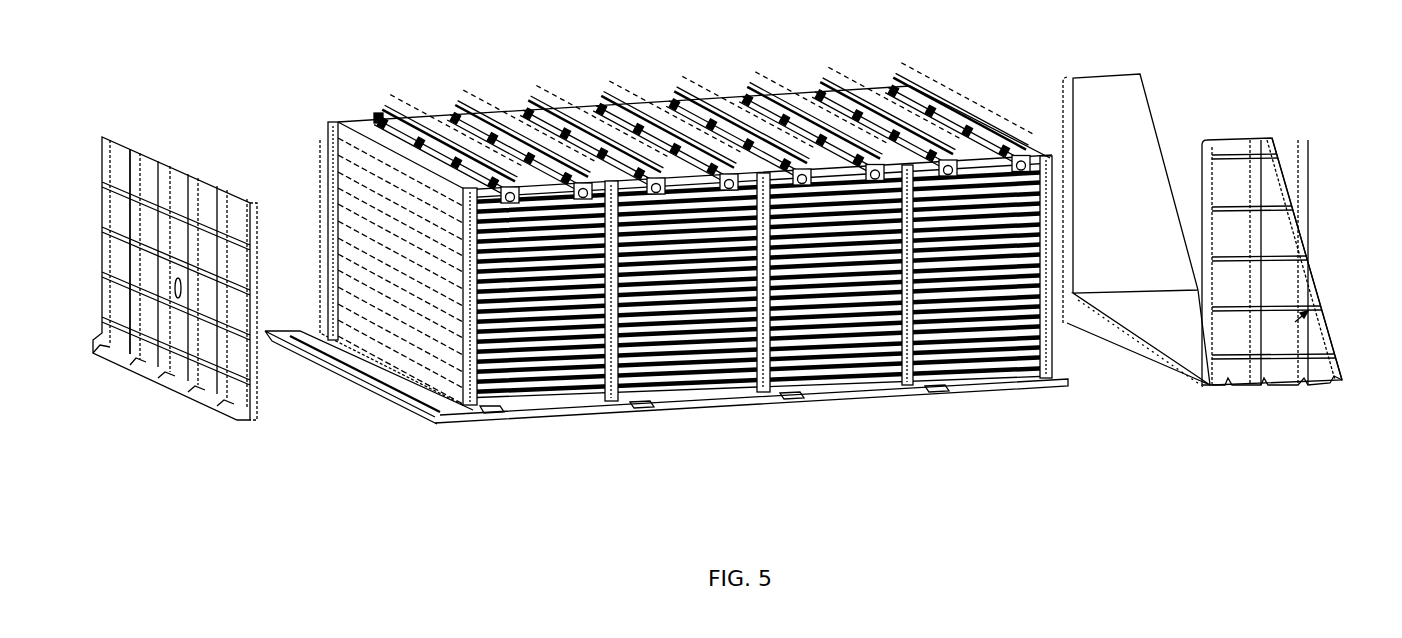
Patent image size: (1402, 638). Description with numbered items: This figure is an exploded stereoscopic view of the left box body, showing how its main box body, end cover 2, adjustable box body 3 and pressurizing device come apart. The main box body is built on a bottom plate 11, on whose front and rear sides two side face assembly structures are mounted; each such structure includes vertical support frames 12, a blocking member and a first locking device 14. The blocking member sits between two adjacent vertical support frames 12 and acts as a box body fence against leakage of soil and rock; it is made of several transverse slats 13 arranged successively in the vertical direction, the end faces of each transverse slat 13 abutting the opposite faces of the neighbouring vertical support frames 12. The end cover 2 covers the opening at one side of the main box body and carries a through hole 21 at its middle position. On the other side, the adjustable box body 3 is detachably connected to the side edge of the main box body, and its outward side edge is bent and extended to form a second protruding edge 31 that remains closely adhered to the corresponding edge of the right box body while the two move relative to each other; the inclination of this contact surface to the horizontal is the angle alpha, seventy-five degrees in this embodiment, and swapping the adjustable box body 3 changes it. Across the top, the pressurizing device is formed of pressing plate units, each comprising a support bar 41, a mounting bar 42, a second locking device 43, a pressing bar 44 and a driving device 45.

The end cover 2 is at (169, 283).
The through hole 21 is at (177, 290).
The adjustable box body 3 is at (1289, 261).
The second protruding edge 31 is at (1293, 177).
The bottom plate 11 is at (412, 378).
The vertical support frame 12 is at (492, 410).
The transverse slat 13 is at (553, 394).
The first locking device 14 is at (613, 402).
The support bar 41 is at (694, 117).
The mounting bar 42 is at (372, 114).
The second locking device 43 is at (498, 140).
The pressing bar 44 is at (397, 119).
The driving device 45 is at (437, 138).